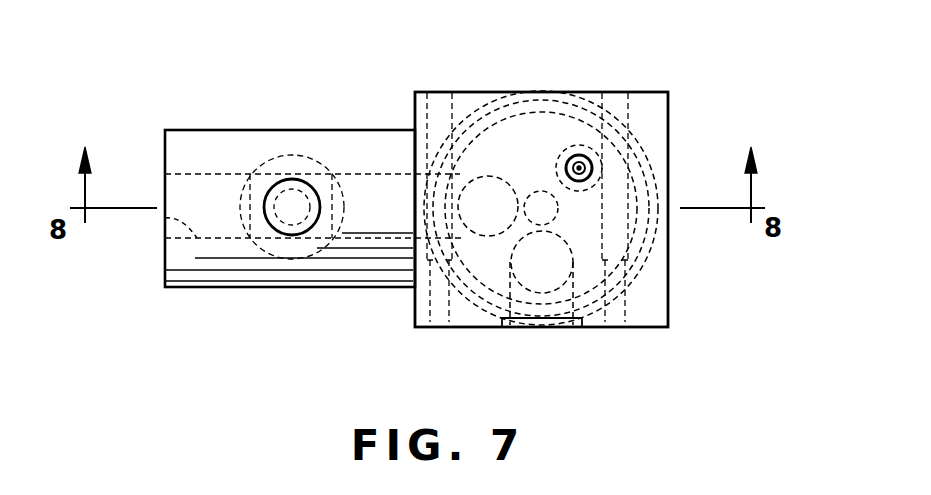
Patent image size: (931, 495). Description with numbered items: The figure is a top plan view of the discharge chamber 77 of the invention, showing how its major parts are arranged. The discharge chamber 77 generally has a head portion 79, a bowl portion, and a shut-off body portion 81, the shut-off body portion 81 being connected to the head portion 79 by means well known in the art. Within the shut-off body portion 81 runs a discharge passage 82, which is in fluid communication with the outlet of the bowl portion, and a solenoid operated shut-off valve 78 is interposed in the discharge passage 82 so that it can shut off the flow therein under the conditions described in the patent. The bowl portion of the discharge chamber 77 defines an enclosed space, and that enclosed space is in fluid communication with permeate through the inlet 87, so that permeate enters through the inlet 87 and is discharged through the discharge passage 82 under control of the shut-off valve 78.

The discharge chamber 77 is at (717, 303).
The solenoid operated shut-off valve 78 is at (297, 156).
The head portion 79 is at (643, 91).
The shut-off body portion 81 is at (245, 290).
The discharge passage 82 is at (165, 218).
The inlet 87 is at (543, 335).